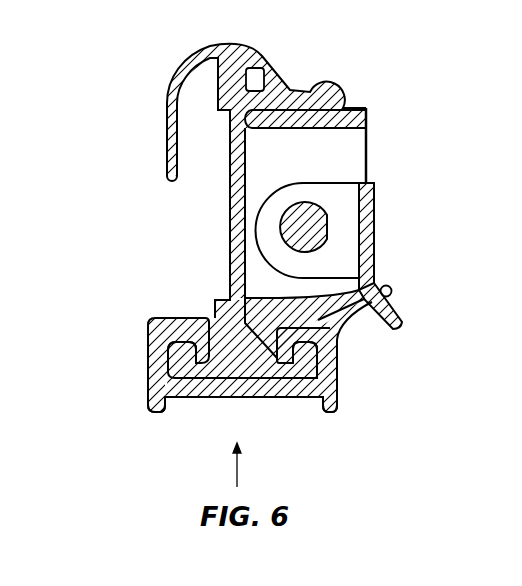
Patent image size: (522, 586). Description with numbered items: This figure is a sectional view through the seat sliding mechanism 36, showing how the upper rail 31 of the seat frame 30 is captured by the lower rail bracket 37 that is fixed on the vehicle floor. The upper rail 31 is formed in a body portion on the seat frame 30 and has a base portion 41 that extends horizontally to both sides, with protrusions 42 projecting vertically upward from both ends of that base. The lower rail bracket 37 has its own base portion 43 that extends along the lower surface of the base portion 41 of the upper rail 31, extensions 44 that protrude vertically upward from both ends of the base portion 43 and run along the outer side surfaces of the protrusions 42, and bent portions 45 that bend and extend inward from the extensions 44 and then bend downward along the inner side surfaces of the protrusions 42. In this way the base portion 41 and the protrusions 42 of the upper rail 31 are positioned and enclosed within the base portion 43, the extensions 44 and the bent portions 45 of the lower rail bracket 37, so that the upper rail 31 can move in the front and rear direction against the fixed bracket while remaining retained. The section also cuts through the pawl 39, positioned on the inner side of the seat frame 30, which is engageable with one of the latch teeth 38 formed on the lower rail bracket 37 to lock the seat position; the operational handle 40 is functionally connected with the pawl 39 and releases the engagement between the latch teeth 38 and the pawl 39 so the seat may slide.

The seat frame 30 is at (270, 61).
The upper rail 31 is at (228, 398).
The seat sliding mechanism 36 is at (129, 321).
The lower rail bracket 37 is at (187, 398).
The latch teeth 38 is at (373, 318).
The pawl 39 is at (372, 243).
The operational handle 40 is at (290, 210).
The base portion 41 is at (258, 398).
The protrusions 42 is at (163, 370).
The base portion 43 is at (295, 398).
The extensions 44 is at (150, 332).
The bent portions 45 is at (193, 330).